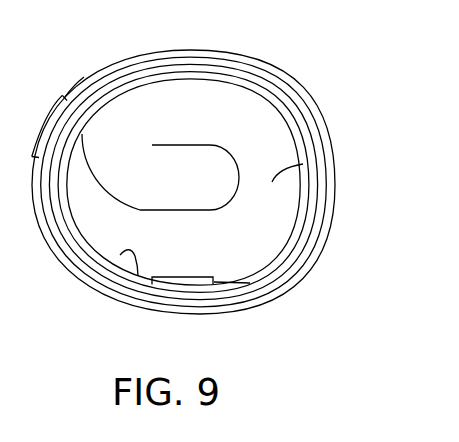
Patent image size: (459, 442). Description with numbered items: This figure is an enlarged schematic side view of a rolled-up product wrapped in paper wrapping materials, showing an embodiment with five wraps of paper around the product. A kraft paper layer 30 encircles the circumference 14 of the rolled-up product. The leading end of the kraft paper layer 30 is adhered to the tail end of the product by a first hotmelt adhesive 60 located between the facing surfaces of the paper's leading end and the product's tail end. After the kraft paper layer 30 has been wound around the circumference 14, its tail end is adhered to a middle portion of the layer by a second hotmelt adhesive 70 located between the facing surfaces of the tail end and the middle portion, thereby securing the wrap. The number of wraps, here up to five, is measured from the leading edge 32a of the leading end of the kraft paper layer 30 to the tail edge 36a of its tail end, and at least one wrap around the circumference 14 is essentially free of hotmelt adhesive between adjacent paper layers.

The kraft paper layer 30 is at (320, 116).
The second hotmelt adhesive 70 is at (52, 122).
The tail edge 36a is at (63, 100).
The circumference 14 is at (272, 182).
The first hotmelt adhesive 60 is at (186, 285).
The leading edge 32a is at (250, 283).